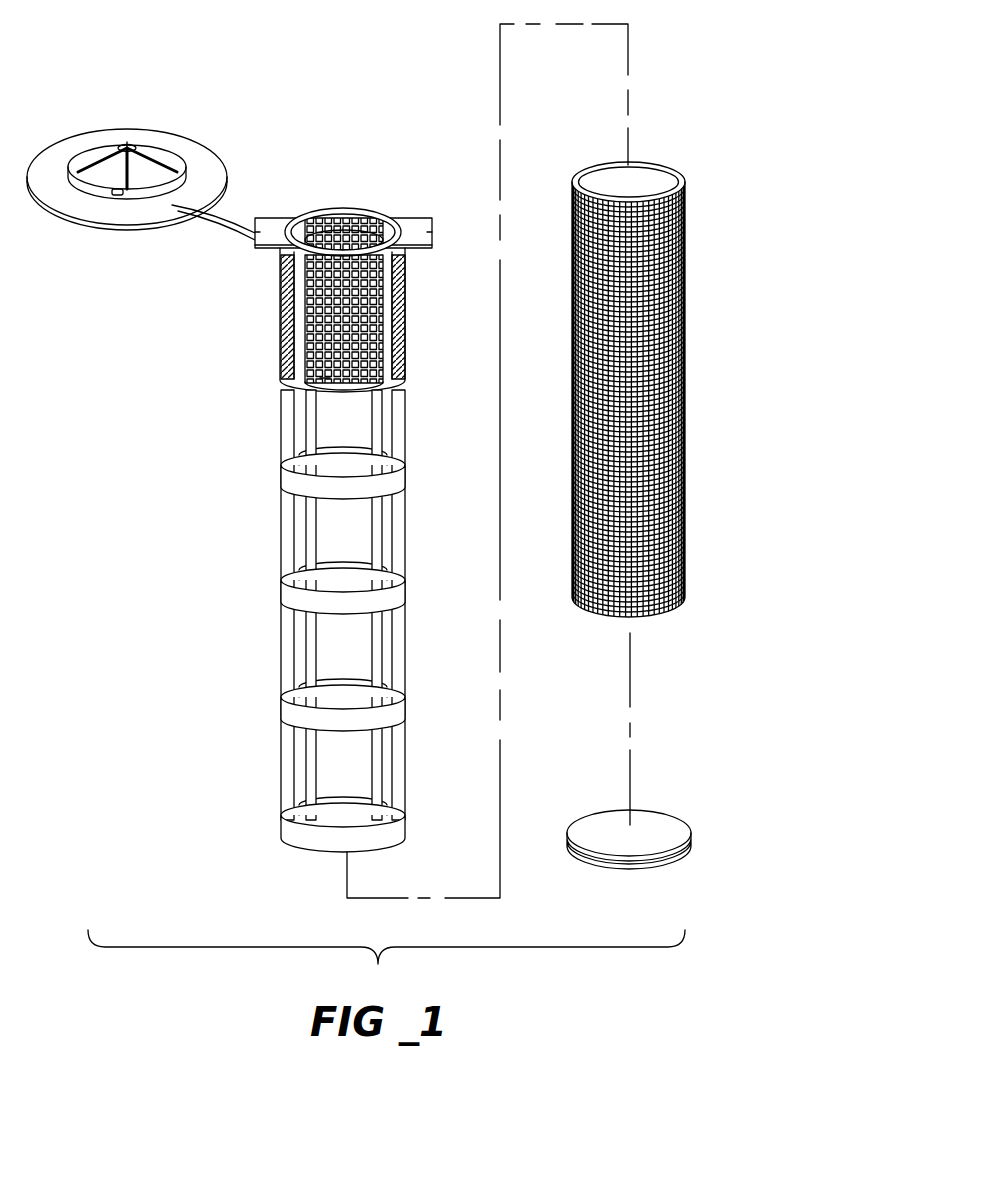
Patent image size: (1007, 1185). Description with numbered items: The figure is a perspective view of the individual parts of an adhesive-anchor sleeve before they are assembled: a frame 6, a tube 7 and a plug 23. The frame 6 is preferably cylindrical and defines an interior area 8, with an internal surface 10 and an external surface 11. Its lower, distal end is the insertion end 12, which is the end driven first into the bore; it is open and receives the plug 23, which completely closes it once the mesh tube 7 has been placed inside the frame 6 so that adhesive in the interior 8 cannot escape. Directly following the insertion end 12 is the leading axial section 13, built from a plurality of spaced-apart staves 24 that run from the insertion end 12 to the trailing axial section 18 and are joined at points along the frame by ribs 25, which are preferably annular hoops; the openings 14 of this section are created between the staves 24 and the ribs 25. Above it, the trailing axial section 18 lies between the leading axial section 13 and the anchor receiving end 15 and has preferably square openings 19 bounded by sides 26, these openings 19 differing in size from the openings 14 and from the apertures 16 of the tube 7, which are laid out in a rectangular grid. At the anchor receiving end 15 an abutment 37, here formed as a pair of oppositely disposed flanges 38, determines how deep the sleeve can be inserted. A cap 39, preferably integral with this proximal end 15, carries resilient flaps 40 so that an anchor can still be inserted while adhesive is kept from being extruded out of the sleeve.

The frame 6 is at (333, 322).
The tube 7 is at (623, 385).
The interior area 8 is at (362, 440).
The internal surface 10 is at (340, 214).
The external surface 11 is at (298, 346).
The insertion end 12 is at (337, 842).
The leading axial section 13 is at (355, 617).
The openings 14 is at (330, 666).
The anchor receiving end 15 is at (382, 212).
The apertures 16 is at (670, 408).
The trailing axial section 18 is at (356, 329).
The openings 19 is at (303, 282).
The plug 23 is at (690, 846).
The staves 24 is at (300, 551).
The ribs 25 is at (298, 384).
The sides 26 is at (320, 380).
The abutment 37 is at (268, 218).
The flanges 38 is at (252, 240).
The cap 39 is at (96, 128).
The resilient flaps 40 is at (140, 152).